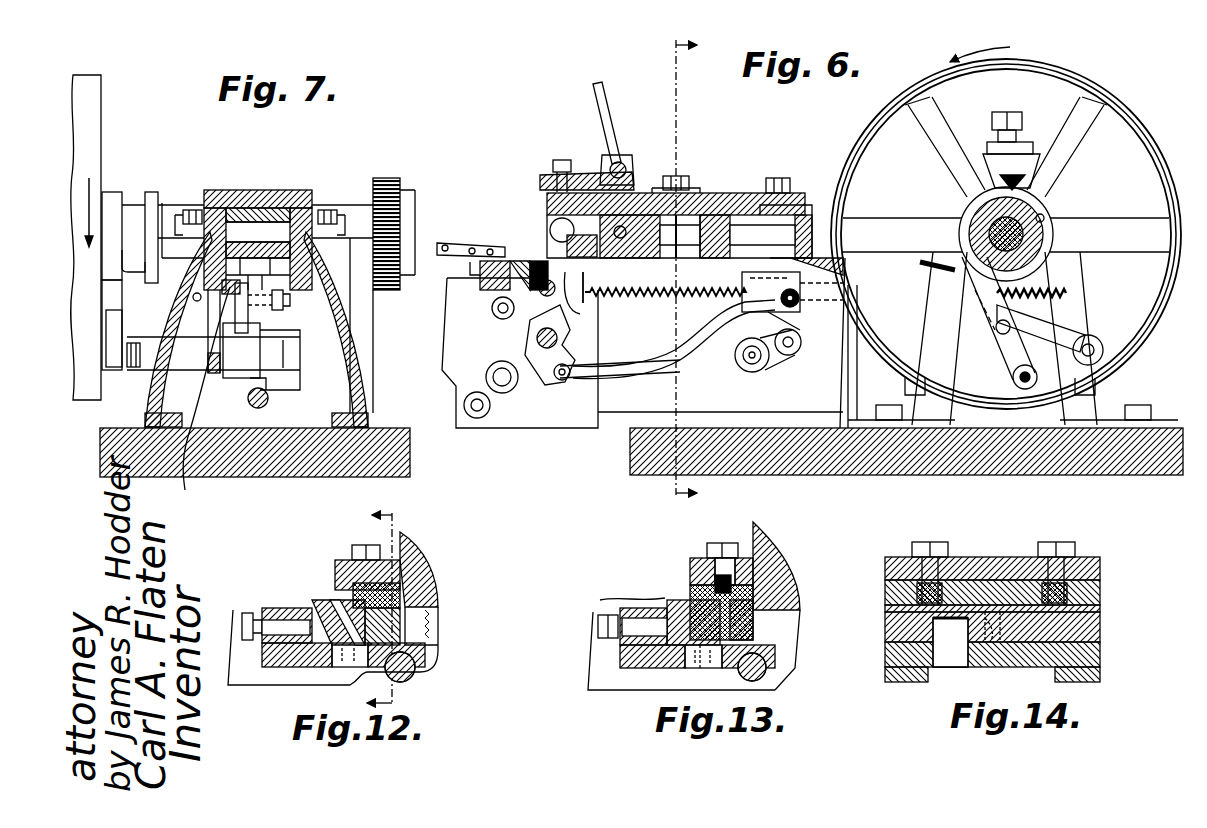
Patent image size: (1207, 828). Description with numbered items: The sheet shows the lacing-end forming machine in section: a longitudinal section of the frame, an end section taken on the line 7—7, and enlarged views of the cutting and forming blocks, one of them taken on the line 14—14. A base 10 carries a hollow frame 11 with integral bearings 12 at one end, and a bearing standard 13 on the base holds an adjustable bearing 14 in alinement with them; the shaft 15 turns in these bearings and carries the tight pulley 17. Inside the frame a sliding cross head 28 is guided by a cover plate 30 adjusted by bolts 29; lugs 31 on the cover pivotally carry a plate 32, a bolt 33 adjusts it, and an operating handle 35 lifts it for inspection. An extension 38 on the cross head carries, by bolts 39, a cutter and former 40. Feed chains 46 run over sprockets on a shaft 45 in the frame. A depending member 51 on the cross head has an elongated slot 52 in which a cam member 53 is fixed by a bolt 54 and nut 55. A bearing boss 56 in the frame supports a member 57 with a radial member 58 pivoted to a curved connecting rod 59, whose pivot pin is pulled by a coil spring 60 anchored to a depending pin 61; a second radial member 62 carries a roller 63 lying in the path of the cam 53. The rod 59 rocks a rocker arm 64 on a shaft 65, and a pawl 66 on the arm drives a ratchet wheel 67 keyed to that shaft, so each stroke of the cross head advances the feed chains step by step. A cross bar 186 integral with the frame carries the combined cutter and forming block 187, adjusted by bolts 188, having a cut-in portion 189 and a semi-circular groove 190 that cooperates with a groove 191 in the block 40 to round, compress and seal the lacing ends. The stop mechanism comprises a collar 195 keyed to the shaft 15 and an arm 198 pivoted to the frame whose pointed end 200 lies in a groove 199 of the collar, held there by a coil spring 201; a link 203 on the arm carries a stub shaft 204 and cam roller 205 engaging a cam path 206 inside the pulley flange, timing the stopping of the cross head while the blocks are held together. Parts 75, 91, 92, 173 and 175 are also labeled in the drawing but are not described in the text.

In FIG. 6, the section line 7— 7 is at (696, 272).
In FIG. 7, the base 10 is at (108, 452).
In FIG. 6, the base 10 is at (1170, 428).
In FIG. 7, the hollow frame 11 is at (150, 406).
In FIG. 12, the hollow frame 11 is at (240, 683).
In FIG. 13, the hollow frame 11 is at (600, 674).
In FIG. 7, the bearings 12 is at (190, 205).
In FIG. 6, the bearing standard 13 is at (1055, 178).
In FIG. 12, the adjustable bearing 14 is at (356, 611).
In FIG. 6, the shaft 15 is at (990, 222).
In FIG. 7, the tight pulley 17 is at (100, 96).
In FIG. 6, the tight pulley 17 is at (1095, 92).
In FIG. 7, the cross head 28 is at (262, 195).
In FIG. 6, the cross head 28 is at (718, 230).
In FIG. 12, the cross head 28 is at (415, 545).
In FIG. 13, the cross head 28 is at (775, 540).
In FIG. 6, the bolts 29 is at (778, 178).
In FIG. 7, the cover plate 30 is at (235, 200).
In FIG. 6, the cover plate 30 is at (705, 195).
In FIG. 6, the lugs or ears 31 is at (658, 185).
In FIG. 6, the plate 32 is at (545, 175).
In FIG. 6, the bolt 33 is at (563, 160).
In FIG. 6, the operating handle 35 is at (602, 90).
In FIG. 6, the extension 38 is at (567, 248).
In FIG. 12, the extension 38 is at (330, 560).
In FIG. 13, the extension 38 is at (690, 568).
In FIG. 14, the extension 38 is at (885, 562).
In FIG. 6, the bolts 39 is at (555, 228).
In FIG. 12, the bolts 39 is at (366, 542).
In FIG. 13, the bolts 39 is at (725, 543).
In FIG. 14, the bolts 39 is at (930, 542).
In FIG. 6, the cutter and former 40 is at (582, 316).
In FIG. 12, the cutter and former 40 is at (355, 585).
In FIG. 13, the cutter and former 40 is at (690, 596).
In FIG. 14, the cutter and former 40 is at (885, 594).
In FIG. 12, the shaft 45 is at (415, 674).
In FIG. 13, the shaft 45 is at (765, 675).
In FIG. 6, the feed chains 46 is at (452, 240).
In FIG. 7, the member 51 is at (300, 205).
In FIG. 6, the member 51 is at (742, 283).
In FIG. 6, the elongated slot 52 is at (812, 300).
In FIG. 6, the cam member 53 is at (800, 348).
In FIG. 7, the bolt 54 is at (216, 288).
In FIG. 7, the nut 55 is at (284, 300).
In FIG. 7, the bearing boss 56 is at (175, 362).
In FIG. 7, the member 57 is at (232, 370).
In FIG. 7, the member 58 is at (208, 305).
In FIG. 6, the member 58 is at (748, 322).
In FIG. 7, the curved connecting rod 59 is at (205, 395).
In FIG. 6, the curved connecting rod 59 is at (635, 372).
In FIG. 6, the coil spring 60 is at (656, 295).
In FIG. 6, the depending pin 61 is at (597, 286).
In FIG. 6, the member 62 is at (780, 370).
In FIG. 6, the roller 63 is at (803, 372).
In FIG. 6, the rocker arm 64 is at (552, 378).
In FIG. 6, the shaft 65 is at (582, 343).
In FIG. 6, the pawl 66 is at (542, 325).
In FIG. 6, the ratchet wheel 67 is at (556, 330).
In FIG. 7, the knob 75 is at (268, 396).
In FIG. 7, the bracket 91 is at (374, 405).
In FIG. 7, the gear 92 is at (390, 178).
In FIG. 6, the plate 173 is at (696, 190).
In FIG. 6, the pin 175 is at (680, 165).
In FIG. 12, the cross bar 186 is at (290, 670).
In FIG. 13, the cross bar 186 is at (625, 670).
In FIG. 14, the cross bar 186 is at (1100, 666).
In FIG. 12, the combined cutter and forming block 187 is at (305, 612).
In FIG. 13, the combined cutter and forming block 187 is at (625, 600).
In FIG. 14, the combined cutter and forming block 187 is at (1100, 628).
In FIG. 12, the bolts 188 is at (242, 618).
In FIG. 13, the bolts 188 is at (598, 625).
In FIG. 12, the cut-in portion 189 is at (330, 600).
In FIG. 14, the cut-in portion 189 is at (962, 665).
In FIG. 13, the semi-circular groove 190 is at (668, 670).
In FIG. 13, the semi-circular groove 191 is at (755, 600).
In FIG. 14, the semi-circular groove 191 is at (1100, 610).
In FIG. 7, the collar 195 is at (112, 192).
In FIG. 6, the collar 195 is at (1042, 218).
In FIG. 6, the arm 198 is at (1005, 355).
In FIG. 7, the groove 199 is at (150, 191).
In FIG. 7, the pointed end 200 is at (136, 245).
In FIG. 6, the pointed end 200 is at (970, 250).
In FIG. 6, the coil spring 201 is at (1060, 290).
In FIG. 6, the link 203 is at (1060, 330).
In FIG. 6, the stub shaft 204 is at (1094, 350).
In FIG. 6, the cam roller 205 is at (1100, 345).
In FIG. 6, the cam path 206 is at (1020, 80).